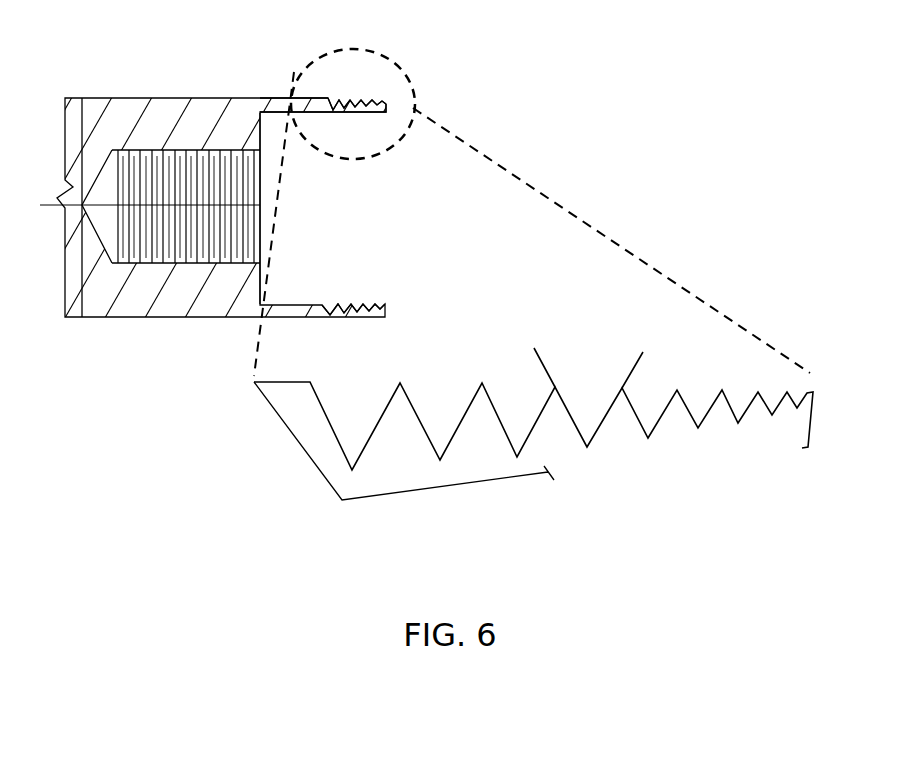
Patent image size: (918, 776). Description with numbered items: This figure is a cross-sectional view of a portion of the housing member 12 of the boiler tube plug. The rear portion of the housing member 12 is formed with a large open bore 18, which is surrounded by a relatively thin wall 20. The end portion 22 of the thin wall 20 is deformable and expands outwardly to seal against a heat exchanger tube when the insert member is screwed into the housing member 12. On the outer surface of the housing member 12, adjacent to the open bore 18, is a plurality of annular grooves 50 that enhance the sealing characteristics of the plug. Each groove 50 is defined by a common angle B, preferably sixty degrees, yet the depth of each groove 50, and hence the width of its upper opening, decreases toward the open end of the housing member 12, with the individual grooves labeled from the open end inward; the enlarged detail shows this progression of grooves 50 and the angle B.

The housing member 12 is at (218, 98).
The thin wall 20 is at (297, 98).
The end portion 22 is at (337, 103).
The open bore 18 is at (328, 257).
The annular grooves 50 is at (437, 396).
The common angle B is at (541, 363).